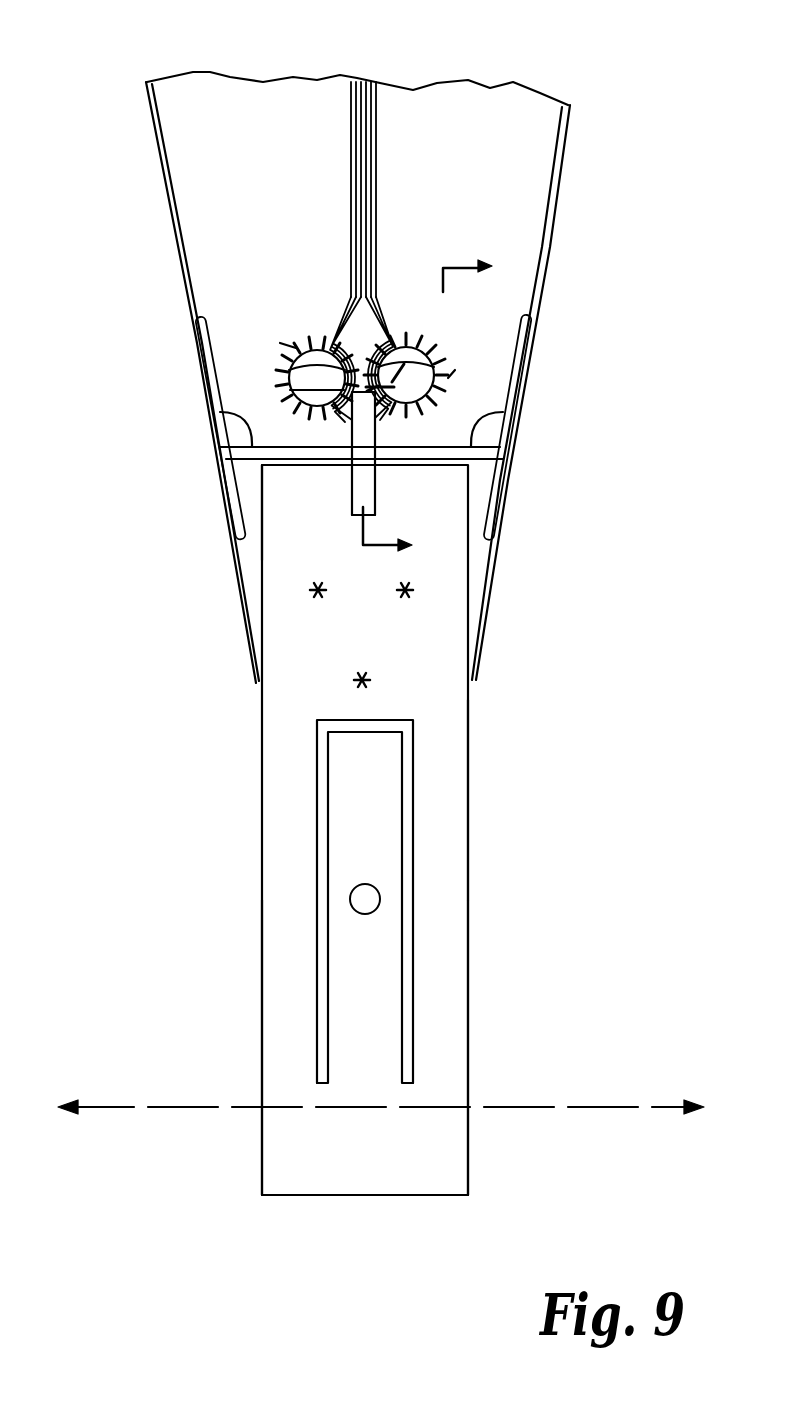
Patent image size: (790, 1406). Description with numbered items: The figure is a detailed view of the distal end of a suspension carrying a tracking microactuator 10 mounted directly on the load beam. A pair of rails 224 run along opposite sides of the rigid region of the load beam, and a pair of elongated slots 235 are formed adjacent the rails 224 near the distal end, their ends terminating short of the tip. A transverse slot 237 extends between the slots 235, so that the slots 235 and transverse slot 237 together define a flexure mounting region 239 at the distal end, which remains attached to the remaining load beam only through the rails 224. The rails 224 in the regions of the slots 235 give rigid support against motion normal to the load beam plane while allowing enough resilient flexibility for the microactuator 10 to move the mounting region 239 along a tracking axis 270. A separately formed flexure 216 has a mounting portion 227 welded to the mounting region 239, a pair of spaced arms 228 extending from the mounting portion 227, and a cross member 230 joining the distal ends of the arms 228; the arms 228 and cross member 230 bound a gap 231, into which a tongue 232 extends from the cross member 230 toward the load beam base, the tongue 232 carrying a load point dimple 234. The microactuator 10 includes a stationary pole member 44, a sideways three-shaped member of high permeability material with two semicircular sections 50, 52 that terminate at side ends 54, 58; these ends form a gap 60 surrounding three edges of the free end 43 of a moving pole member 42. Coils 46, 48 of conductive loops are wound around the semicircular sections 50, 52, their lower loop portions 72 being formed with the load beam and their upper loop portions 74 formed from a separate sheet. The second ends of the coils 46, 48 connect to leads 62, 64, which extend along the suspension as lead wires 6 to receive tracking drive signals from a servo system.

The lead wires 6 is at (358, 82).
The tracking microactuator 10 is at (447, 413).
The moving pole member 42 is at (366, 470).
The free end of moving pole member 43 is at (358, 420).
The stationary pole member 44 is at (290, 368).
The first coil 46 is at (285, 318).
The second coil 48 is at (399, 305).
The first semicircular section 50 is at (301, 322).
The second semicircular section 52 is at (445, 336).
The side end of pole member 54 is at (224, 454).
The side end of pole member 58 is at (385, 433).
The gap 60 is at (290, 390).
The lead 62 is at (348, 124).
The lead 64 is at (378, 120).
The lower loop portions 72 is at (448, 402).
The upper loop portions 74 is at (290, 351).
The flexure 216 is at (492, 889).
The rails 224 is at (183, 291).
The mounting portion 227 is at (420, 636).
The spaced arms 228 is at (282, 948).
The cross member 230 is at (400, 1150).
The gap 231 is at (316, 820).
The tongue 232 is at (338, 772).
The load point dimple 234 is at (352, 897).
The elongated slots 235 is at (224, 486).
The transverse slot 237 is at (222, 416).
The flexure mounting region 239 is at (258, 556).
The tracking axis 270 is at (560, 1102).